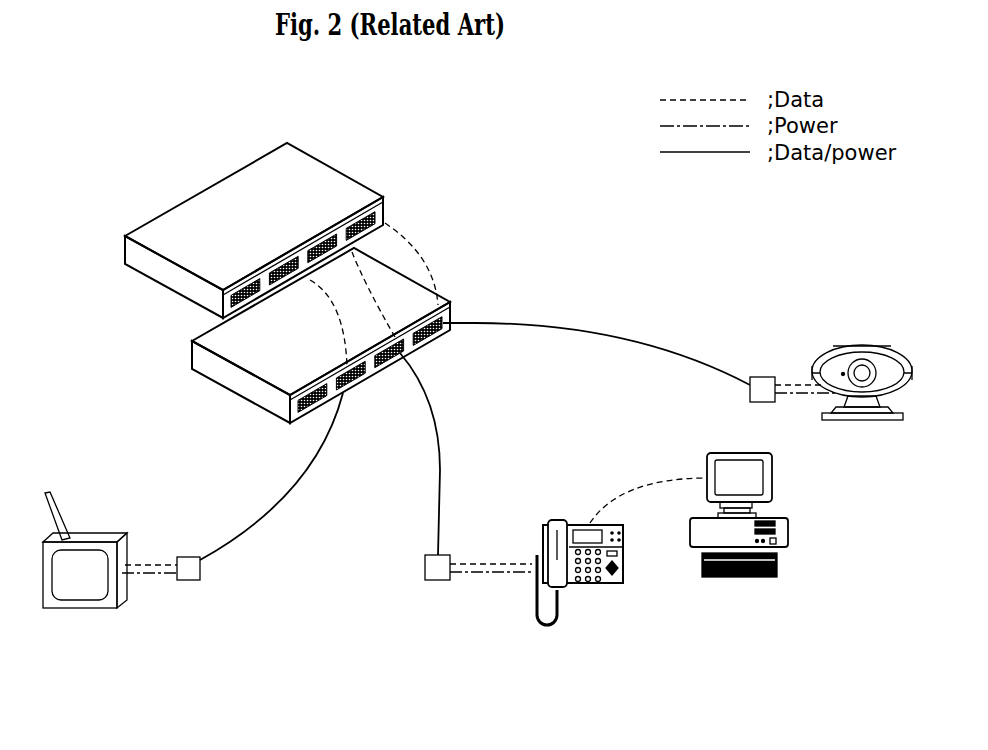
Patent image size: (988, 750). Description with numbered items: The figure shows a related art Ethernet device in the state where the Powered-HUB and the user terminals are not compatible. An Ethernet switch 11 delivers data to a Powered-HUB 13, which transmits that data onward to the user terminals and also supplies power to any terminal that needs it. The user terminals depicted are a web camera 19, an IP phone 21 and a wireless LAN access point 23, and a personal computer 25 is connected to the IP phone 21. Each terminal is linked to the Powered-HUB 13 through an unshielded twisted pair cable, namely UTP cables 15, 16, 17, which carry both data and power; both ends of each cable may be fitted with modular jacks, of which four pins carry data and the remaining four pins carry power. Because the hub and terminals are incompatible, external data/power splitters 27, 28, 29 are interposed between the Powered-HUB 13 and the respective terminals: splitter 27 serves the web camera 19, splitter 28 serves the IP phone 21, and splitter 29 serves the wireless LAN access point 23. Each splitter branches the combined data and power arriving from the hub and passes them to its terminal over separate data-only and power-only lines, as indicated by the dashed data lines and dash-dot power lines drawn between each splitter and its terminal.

The Ethernet switch 11 is at (343, 172).
The Powered-HUB 13 is at (410, 277).
The UTP cable 15 is at (690, 358).
The UTP cable 16 is at (440, 447).
The UTP cable 17 is at (302, 485).
The web camera 19 is at (870, 343).
The IP phone 21 is at (617, 580).
The wireless LAN access point 23 is at (90, 608).
The personal computer 25 is at (772, 478).
The data/power splitter 27 is at (763, 377).
The data/power splitter 28 is at (437, 580).
The data/power splitter 29 is at (200, 575).